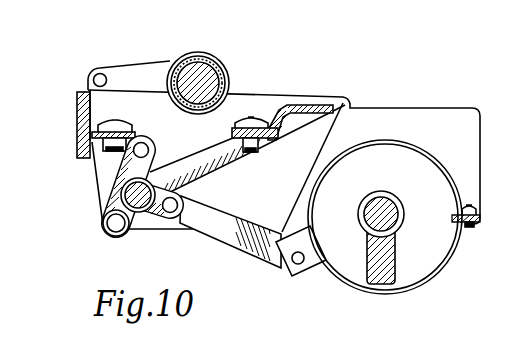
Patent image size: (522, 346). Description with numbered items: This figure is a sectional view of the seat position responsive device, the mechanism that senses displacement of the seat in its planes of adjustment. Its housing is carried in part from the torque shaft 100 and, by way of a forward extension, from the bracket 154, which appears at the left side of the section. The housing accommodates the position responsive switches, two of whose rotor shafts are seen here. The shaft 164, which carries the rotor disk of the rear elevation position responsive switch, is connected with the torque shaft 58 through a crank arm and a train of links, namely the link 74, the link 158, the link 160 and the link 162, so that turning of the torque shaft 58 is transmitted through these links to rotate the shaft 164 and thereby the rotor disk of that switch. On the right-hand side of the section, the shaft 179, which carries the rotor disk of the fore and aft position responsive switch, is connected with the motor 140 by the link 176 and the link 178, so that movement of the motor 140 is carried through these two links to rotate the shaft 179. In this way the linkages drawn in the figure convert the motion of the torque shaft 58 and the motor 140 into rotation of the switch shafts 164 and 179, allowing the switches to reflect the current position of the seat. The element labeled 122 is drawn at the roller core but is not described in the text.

The torque shaft 58 is at (227, 86).
The link 74 is at (131, 186).
The torque shaft 100 is at (224, 67).
The roller core 122 is at (200, 66).
The motor 140 is at (410, 163).
The bracket 154 is at (77, 128).
The link 158 is at (171, 215).
The link 160 is at (119, 234).
The link 162 is at (120, 193).
The shaft 164 is at (141, 143).
The link 176 is at (243, 209).
The link 178 is at (214, 161).
The shaft 179 is at (262, 146).